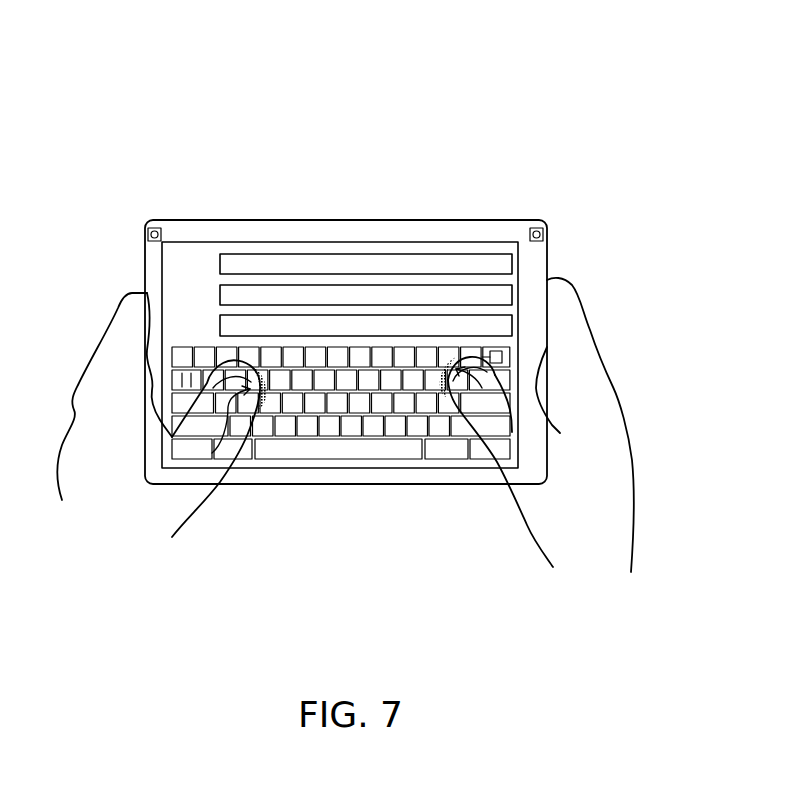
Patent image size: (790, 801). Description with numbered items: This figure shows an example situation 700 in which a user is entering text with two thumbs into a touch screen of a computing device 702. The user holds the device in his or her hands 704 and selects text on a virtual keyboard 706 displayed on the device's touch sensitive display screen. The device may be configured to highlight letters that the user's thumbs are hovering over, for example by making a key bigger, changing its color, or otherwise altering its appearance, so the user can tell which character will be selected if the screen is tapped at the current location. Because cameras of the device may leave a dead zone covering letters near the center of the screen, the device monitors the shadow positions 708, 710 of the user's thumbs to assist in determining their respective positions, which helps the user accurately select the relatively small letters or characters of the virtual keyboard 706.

The example situation 700 is at (648, 120).
The computing device 702 is at (248, 221).
The hands 704 is at (112, 298).
The virtual keyboard 706 is at (438, 502).
The shadow position 708 is at (212, 453).
The shadow position 710 is at (512, 432).